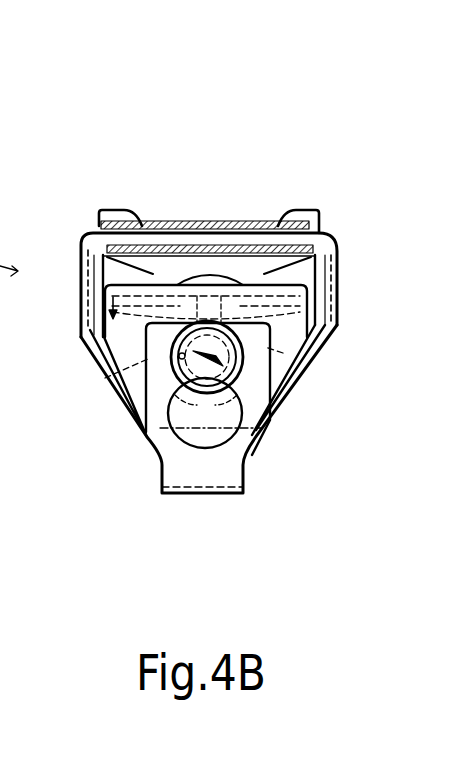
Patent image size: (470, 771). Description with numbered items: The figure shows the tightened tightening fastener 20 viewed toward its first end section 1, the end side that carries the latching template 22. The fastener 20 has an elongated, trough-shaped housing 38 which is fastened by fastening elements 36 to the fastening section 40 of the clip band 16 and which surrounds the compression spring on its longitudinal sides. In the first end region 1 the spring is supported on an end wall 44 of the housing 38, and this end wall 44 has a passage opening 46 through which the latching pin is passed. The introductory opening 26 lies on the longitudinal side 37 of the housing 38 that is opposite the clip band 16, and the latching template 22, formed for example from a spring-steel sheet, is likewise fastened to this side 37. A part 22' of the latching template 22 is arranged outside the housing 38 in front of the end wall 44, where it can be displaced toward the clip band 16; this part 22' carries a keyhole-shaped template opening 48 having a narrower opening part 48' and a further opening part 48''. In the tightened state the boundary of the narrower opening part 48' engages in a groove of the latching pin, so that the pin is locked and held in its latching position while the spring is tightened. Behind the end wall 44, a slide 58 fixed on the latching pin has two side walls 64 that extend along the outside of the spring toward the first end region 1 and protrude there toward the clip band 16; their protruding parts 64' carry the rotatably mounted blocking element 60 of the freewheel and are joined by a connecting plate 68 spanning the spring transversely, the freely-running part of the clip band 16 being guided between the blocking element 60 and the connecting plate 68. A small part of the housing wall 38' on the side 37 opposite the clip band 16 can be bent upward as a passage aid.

The first end section 1 is at (280, 517).
The tightening fastener 20 is at (348, 122).
The slide 58 is at (81, 246).
The fastening elements 36 is at (112, 210).
The blocking element 60 is at (150, 270).
The connecting plate 68 is at (182, 245).
The fastening section 40 is at (222, 221).
The clip band 16 is at (323, 240).
The parts of the side walls 64' is at (378, 267).
The end wall 44 is at (320, 295).
The passage opening 46 is at (243, 342).
The side walls 64 is at (236, 365).
The housing 38 is at (270, 396).
The housing wall 38' is at (311, 457).
The part of the latching template 22' is at (59, 344).
The narrower opening part 48' is at (98, 419).
The further opening part 48'' is at (110, 464).
The latching template 22 is at (209, 386).
The introductory opening 26 is at (193, 452).
The longitudinal side 37 is at (180, 503).
The template opening 48 is at (211, 477).